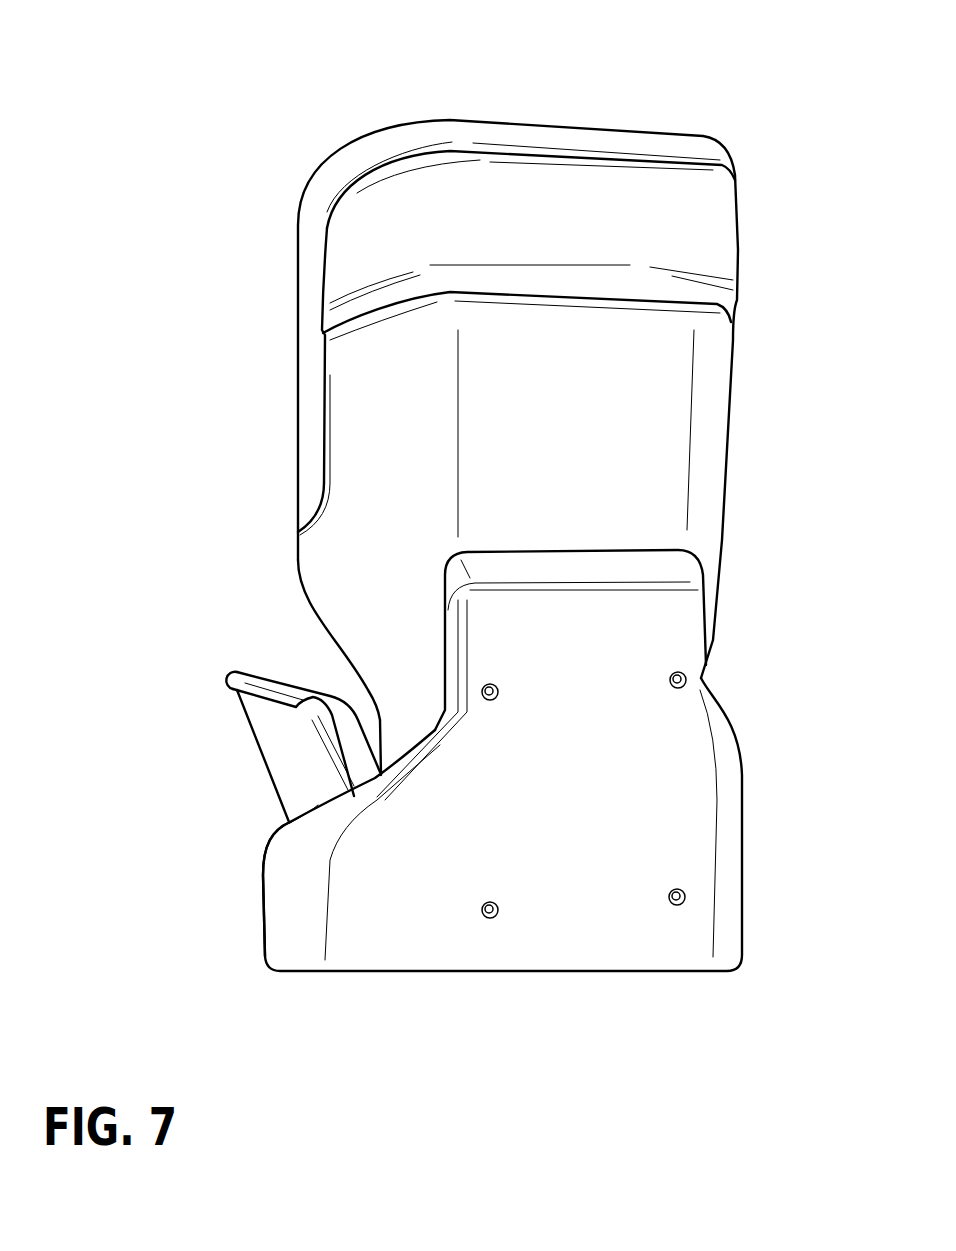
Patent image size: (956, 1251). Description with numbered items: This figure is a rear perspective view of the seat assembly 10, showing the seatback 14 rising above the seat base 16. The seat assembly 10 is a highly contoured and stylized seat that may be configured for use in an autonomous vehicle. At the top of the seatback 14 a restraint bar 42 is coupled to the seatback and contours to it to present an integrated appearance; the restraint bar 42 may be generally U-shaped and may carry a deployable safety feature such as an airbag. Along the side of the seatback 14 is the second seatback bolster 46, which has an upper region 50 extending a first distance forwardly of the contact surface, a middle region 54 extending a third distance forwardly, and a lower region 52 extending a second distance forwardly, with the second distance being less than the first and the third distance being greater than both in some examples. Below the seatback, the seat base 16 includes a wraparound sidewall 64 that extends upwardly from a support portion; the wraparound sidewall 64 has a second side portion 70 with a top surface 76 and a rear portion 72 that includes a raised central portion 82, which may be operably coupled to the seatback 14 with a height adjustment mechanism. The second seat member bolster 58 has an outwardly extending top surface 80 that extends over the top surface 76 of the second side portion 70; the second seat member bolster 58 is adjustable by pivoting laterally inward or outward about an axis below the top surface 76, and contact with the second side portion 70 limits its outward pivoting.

The seat assembly 10 is at (646, 90).
The seatback 14 is at (646, 412).
The seat base 16 is at (738, 845).
The restraint bar 42 is at (425, 137).
The second seatback bolster 46 is at (315, 543).
The upper region 50 is at (352, 363).
The lower region 52 is at (386, 700).
The middle region 54 is at (340, 613).
The second seat member bolster 58 is at (238, 700).
The wraparound sidewall 64 is at (720, 915).
The second side portion 70 is at (293, 900).
The rear portion 72 is at (585, 803).
The top surface 76 is at (337, 813).
The top surface 80 is at (277, 686).
The raised central portion 82 is at (595, 636).